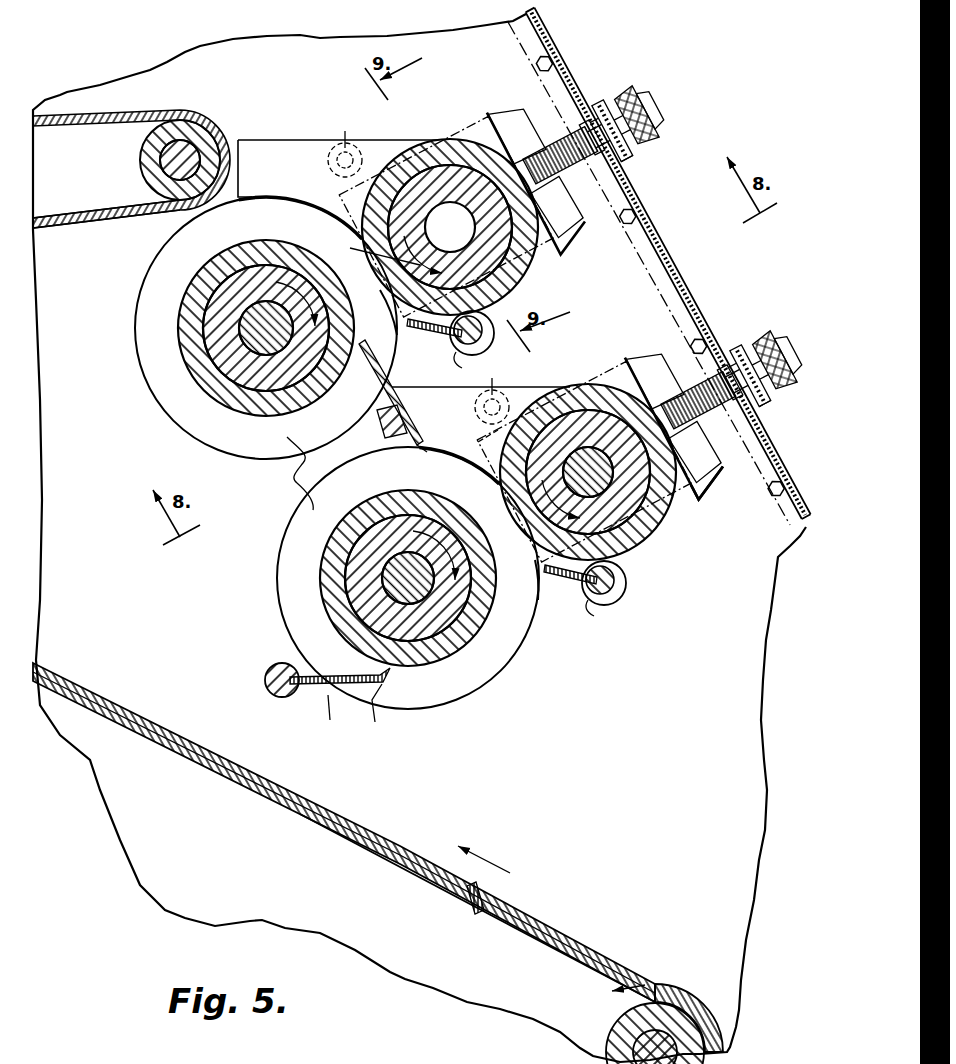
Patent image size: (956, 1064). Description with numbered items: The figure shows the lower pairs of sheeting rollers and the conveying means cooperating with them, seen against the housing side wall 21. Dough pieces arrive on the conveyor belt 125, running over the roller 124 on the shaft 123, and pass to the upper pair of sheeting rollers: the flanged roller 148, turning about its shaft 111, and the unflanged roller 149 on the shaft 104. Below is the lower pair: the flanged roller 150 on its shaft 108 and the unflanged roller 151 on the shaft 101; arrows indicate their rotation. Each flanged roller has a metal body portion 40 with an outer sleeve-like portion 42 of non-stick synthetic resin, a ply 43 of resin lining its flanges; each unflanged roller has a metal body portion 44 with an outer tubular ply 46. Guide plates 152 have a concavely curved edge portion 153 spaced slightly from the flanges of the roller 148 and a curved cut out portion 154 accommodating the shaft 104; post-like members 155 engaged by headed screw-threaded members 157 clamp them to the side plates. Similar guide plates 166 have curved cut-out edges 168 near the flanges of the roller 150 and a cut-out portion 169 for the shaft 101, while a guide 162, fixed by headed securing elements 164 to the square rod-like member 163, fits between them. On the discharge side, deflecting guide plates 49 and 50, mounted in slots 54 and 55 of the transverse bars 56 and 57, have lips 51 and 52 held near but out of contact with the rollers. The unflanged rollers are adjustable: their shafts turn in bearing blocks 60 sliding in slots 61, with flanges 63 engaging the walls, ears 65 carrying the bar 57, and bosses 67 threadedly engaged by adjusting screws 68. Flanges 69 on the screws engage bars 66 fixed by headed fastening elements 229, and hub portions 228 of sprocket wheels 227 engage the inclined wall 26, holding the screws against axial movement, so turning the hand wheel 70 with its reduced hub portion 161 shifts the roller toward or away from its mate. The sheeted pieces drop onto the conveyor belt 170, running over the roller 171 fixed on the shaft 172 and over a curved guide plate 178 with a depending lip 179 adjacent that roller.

The side wall 21 is at (768, 598).
The inclined wall portion 26 is at (638, 190).
The metal body portion 40 is at (210, 328).
The outer sleeve-like portion 42 is at (190, 295).
The ply of synthetic resin 43 is at (288, 473).
The metal body portion 44 is at (452, 170).
The outer tubular ply 46 is at (540, 265).
The dough deflecting guide plate 49 is at (321, 720).
The dough deflecting guide plate 50 is at (445, 335).
The lip 51 is at (371, 716).
The lip 52 is at (397, 332).
The slot 54 is at (292, 690).
The slot 55 is at (536, 490).
The bar 56 is at (272, 692).
The rod-like bar 57 is at (486, 343).
The bearing block 60 is at (505, 115).
The slot 61 is at (565, 205).
The flange 63 is at (492, 112).
The ear 65 is at (480, 320).
The bar 66 is at (683, 272).
The boss 67 is at (565, 182).
The adjusting screw 68 is at (565, 125).
The flange 69 is at (612, 170).
The knurled head or hand wheel 70 is at (665, 130).
The shaft 101 is at (580, 478).
The shaft 104 is at (370, 248).
The roller shaft 108 is at (385, 583).
The roller shaft 111 is at (255, 340).
The shaft 123 is at (195, 140).
The roller 124 is at (145, 200).
The conveyor belt 125 is at (120, 117).
The flanged roller 148 is at (205, 390).
The unflanged roller 149 is at (432, 140).
The flanged roller 150 is at (325, 615).
The unflanged roller 151 is at (692, 500).
The guide plate 152 is at (290, 126).
The concavely curved edge portion 153 is at (298, 200).
The curved cut out portion 154 is at (395, 140).
The post-like member 155 is at (358, 128).
The headed screw-threaded member 157 is at (335, 148).
The reduced hub portion 161 is at (615, 100).
The guide 162 is at (383, 375).
The rod-like member 163 is at (378, 418).
The headed securing element 164 is at (421, 440).
The guide plate 166 is at (455, 398).
The curved cut-out edge 168 is at (430, 450).
The curved cut-out portion 169 is at (485, 470).
The conveyor belt 170 is at (600, 956).
The roller 171 is at (683, 1000).
The shaft 172 is at (620, 1010).
The curved guide plate 178 is at (263, 793).
The depending lip 179 is at (483, 914).
The sprocket wheel 227 is at (637, 160).
The hub portion 228 is at (590, 107).
The headed fastening element 229 is at (552, 58).